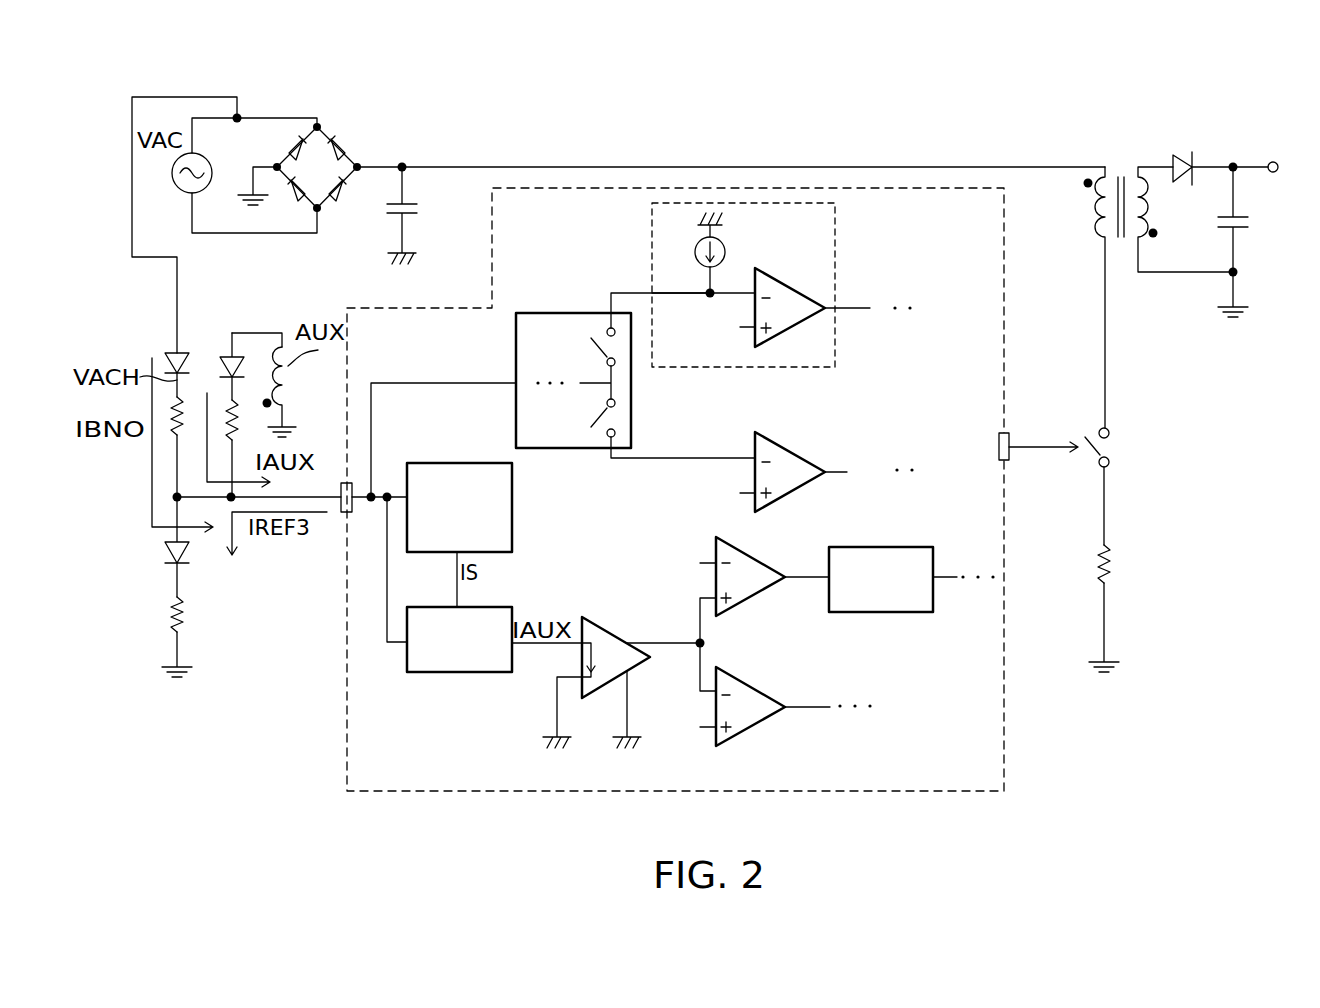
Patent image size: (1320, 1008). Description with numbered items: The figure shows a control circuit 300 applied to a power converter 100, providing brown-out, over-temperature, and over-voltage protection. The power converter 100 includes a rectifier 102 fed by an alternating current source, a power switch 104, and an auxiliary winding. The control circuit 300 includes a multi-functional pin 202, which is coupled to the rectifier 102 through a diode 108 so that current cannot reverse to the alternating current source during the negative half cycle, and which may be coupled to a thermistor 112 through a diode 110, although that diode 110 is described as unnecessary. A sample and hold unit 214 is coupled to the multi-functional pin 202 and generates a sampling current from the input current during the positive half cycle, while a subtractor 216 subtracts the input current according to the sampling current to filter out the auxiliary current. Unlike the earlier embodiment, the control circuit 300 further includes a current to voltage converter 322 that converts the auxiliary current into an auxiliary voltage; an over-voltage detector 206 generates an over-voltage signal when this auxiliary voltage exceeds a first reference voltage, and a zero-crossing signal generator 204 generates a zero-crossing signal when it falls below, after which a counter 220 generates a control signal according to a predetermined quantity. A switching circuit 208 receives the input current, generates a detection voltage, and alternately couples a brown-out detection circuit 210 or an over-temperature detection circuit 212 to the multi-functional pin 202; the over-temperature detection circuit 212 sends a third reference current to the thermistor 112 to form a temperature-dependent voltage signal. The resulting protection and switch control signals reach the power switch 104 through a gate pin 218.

The power converter 100 is at (1212, 132).
The rectifier 102 is at (323, 130).
The power switch 104 is at (1110, 441).
The diode 108 is at (167, 352).
The diode 110 is at (185, 552).
The thermistor 112 is at (185, 613).
The multi-functional pin 202 is at (355, 512).
The zero-crossing signal generator 204 is at (748, 550).
The over-voltage detector 206 is at (742, 677).
The switching circuit 208 is at (535, 313).
The brown-out detection circuit 210 is at (788, 449).
The over-temperature detection circuit 212 is at (836, 228).
The sample and hold unit 214 is at (512, 480).
The subtractor 216 is at (490, 607).
The gate pin 218 is at (1006, 460).
The counter 220 is at (900, 612).
The control circuit 300 is at (928, 793).
The current to voltage converter 322 is at (604, 626).